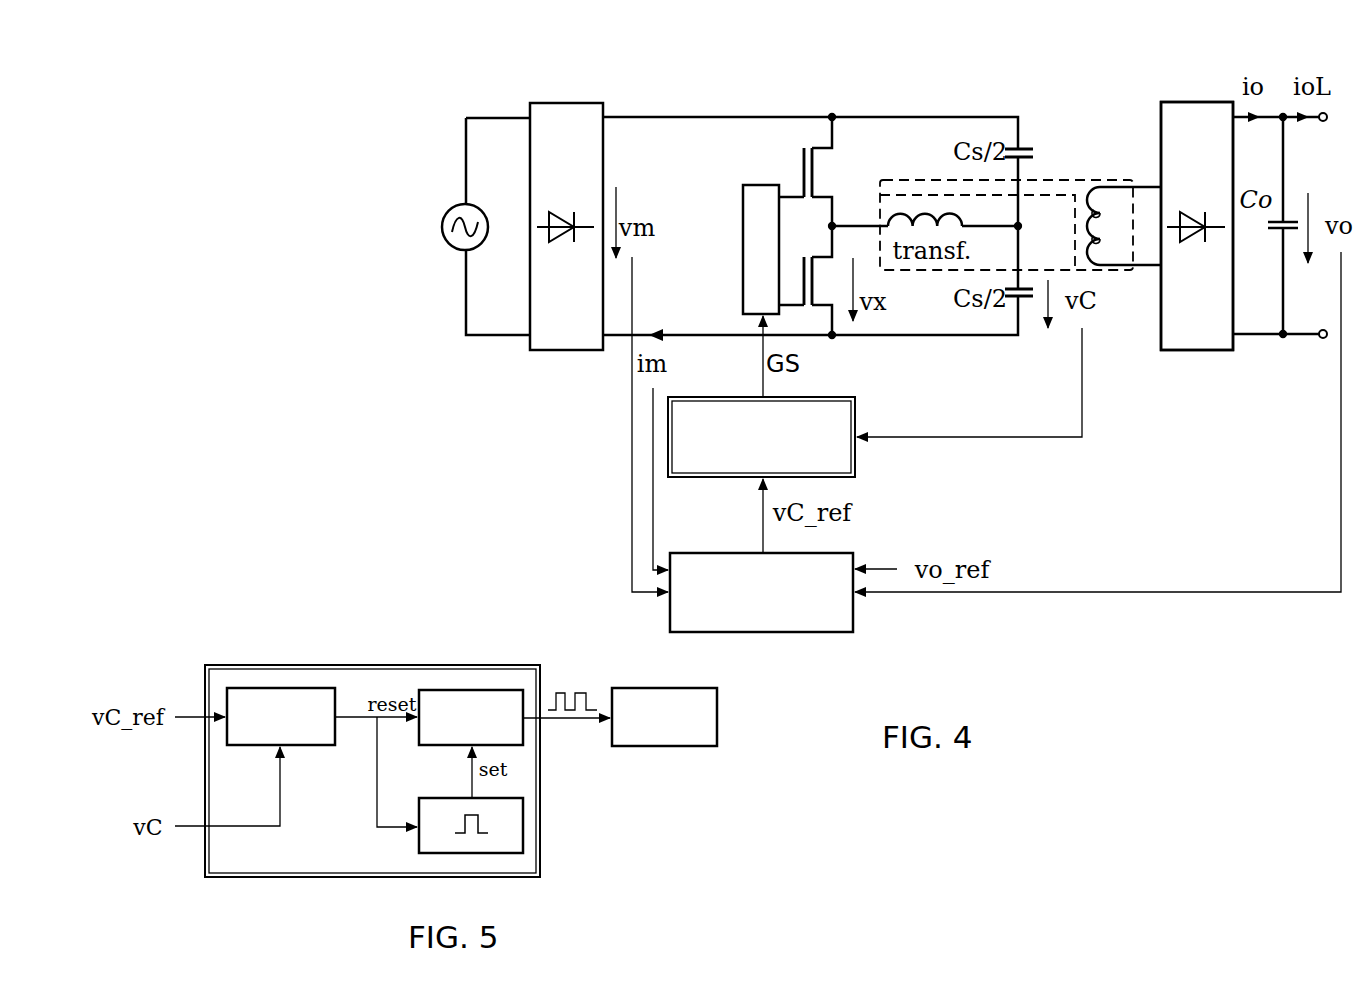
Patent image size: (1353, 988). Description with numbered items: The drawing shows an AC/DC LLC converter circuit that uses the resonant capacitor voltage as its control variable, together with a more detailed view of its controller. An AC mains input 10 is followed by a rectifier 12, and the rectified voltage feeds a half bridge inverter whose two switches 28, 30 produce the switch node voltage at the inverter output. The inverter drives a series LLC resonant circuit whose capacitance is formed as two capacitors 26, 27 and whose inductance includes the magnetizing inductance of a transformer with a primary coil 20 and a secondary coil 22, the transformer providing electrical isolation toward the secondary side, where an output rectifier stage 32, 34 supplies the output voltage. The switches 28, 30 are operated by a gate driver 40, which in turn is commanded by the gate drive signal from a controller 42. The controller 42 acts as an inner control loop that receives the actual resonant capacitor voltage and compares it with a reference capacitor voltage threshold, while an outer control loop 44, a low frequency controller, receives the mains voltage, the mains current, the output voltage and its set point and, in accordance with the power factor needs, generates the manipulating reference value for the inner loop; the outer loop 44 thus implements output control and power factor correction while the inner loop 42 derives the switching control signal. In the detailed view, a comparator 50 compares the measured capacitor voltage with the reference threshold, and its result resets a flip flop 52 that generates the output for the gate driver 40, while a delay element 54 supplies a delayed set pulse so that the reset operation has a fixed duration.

In FIG. 4, the AC mains input 10 is at (451, 212).
In FIG. 4, the rectifier 12 is at (571, 103).
In FIG. 4, the primary coil 20 is at (925, 214).
In FIG. 4, the secondary coil 22 is at (1100, 176).
In FIG. 4, the capacitor 26 is at (1033, 149).
In FIG. 4, the capacitor 27 is at (1026, 300).
In FIG. 4, the switch 28 is at (820, 152).
In FIG. 4, the switch 30 is at (818, 259).
In FIG. 4, the output rectifier 32 is at (1195, 102).
In FIG. 4, the output filter capacitor 34 is at (1197, 197).
In FIG. 4, the gate driver 40 is at (743, 222).
In FIG. 5, the gate driver 40 is at (717, 732).
In FIG. 4, the controller 42 is at (855, 420).
In FIG. 5, the controller 42 is at (205, 690).
In FIG. 4, the outer control loop 44 is at (845, 553).
In FIG. 5, the comparator 50 is at (260, 688).
In FIG. 5, the flip flop 52 is at (523, 730).
In FIG. 5, the delay element 54 is at (523, 833).